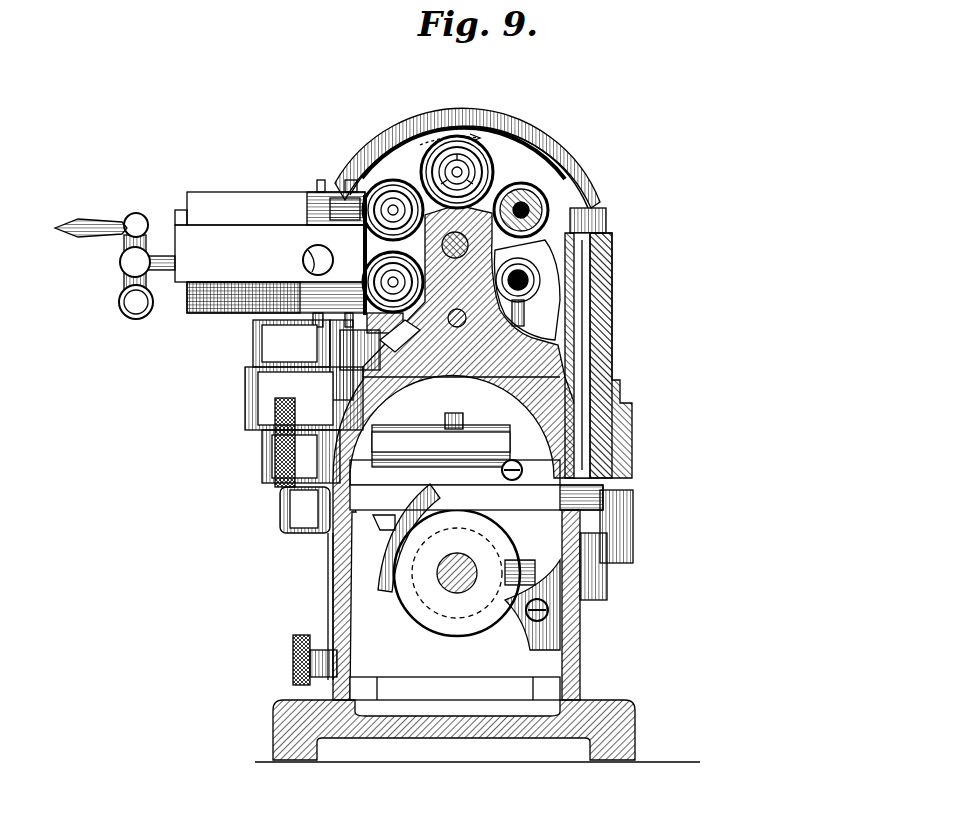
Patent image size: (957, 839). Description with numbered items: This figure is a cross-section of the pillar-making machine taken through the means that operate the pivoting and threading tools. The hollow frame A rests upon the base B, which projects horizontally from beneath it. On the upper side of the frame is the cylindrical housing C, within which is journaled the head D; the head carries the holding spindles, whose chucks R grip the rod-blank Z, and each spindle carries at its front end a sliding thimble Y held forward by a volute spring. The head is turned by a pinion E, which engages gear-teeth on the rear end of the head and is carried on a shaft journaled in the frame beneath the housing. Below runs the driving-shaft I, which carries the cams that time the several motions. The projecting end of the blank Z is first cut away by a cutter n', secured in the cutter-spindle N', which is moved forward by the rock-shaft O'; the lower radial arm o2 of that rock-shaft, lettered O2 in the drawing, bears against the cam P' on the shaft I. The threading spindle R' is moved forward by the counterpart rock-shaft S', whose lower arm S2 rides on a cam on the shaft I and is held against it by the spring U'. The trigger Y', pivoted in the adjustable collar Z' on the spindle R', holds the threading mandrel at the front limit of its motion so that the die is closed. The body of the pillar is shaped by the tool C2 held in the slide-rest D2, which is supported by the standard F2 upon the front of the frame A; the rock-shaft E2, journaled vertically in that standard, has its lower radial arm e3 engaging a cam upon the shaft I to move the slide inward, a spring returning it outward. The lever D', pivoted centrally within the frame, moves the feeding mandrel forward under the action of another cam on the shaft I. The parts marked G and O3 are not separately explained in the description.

The chuck R is at (462, 171).
The cylindrical housing C is at (457, 134).
The rod-blank Z is at (469, 150).
The head D is at (478, 150).
The cutter-spindle N' is at (545, 179).
The cutter n' is at (557, 183).
The lower radial arm o2 is at (580, 205).
The thimble Y is at (393, 195).
The driving-shaft I is at (432, 417).
The tool C2 is at (375, 292).
The slide-rest D2 is at (210, 253).
The boss G is at (455, 253).
The rock-shaft S' is at (527, 286).
The pinion E is at (454, 452).
The rock-shaft O' is at (614, 355).
The collar Z' is at (615, 355).
The threading spindle R' is at (620, 355).
The trigger Y' is at (618, 355).
The standard F2 is at (256, 390).
The lever D' is at (455, 449).
The screw O2 is at (504, 472).
The bar O3 is at (476, 497).
The lower radial arm e3 is at (375, 520).
The rock-shaft E2 is at (318, 536).
The hollow frame A is at (451, 605).
The cam P' is at (409, 570).
The lower radial arm S2 is at (520, 614).
The spring U' is at (532, 616).
The base B is at (477, 731).